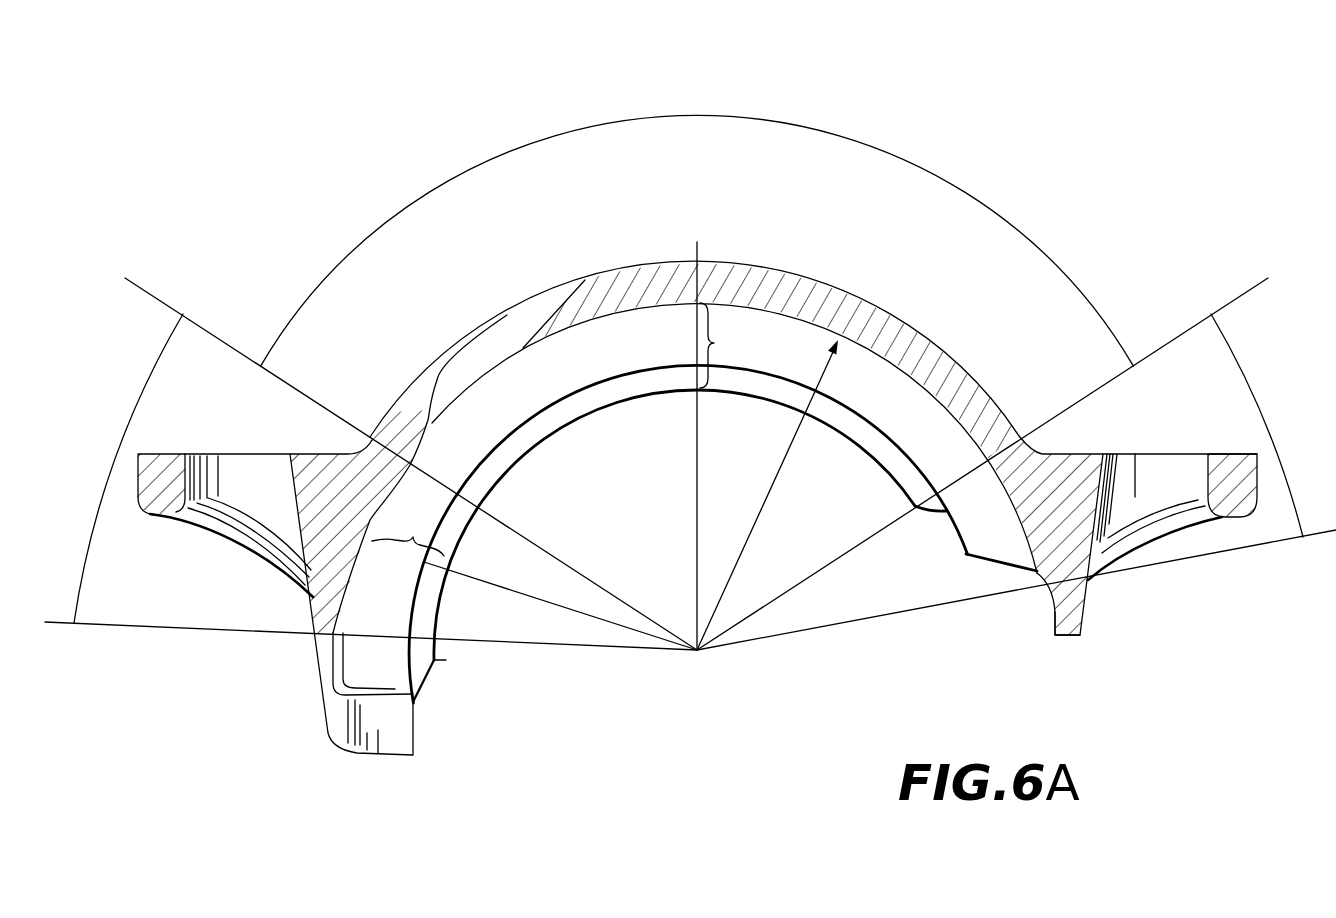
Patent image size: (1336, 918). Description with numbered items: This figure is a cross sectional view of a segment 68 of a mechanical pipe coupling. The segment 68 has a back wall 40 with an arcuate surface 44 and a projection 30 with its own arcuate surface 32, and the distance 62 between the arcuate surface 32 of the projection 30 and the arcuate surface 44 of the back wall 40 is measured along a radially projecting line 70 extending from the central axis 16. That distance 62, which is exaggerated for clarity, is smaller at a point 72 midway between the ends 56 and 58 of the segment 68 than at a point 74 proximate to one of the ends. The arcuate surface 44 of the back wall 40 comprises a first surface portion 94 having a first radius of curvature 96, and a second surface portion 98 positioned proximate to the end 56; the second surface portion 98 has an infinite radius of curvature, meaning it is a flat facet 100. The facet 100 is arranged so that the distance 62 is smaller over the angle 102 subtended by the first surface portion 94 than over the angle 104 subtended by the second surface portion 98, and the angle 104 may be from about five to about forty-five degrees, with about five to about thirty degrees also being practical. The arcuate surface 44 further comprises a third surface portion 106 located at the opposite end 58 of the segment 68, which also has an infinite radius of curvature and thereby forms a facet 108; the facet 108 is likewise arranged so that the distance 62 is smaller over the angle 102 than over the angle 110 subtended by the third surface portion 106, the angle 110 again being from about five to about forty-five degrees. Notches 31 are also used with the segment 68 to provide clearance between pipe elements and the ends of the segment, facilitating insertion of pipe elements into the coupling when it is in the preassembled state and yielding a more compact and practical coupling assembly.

The central axis 16 is at (697, 652).
The projection 30 is at (899, 473).
The notches 31 is at (940, 528).
The arcuate surface 32 is at (900, 488).
The back wall 40 is at (983, 405).
The arcuate surface 44 is at (1012, 506).
The end 56 is at (378, 758).
The end 58 is at (1040, 610).
The distance 62 is at (566, 429).
The segment 68 is at (703, 402).
The radially projecting line 70 is at (538, 597).
The point 72 is at (697, 303).
The point 74 is at (450, 566).
The first surface portion 94 is at (923, 390).
The first radius of curvature 96 is at (738, 573).
The second surface portion 98 is at (360, 557).
The facet 100 is at (355, 578).
The angle 102 is at (820, 128).
The angle 104 is at (129, 420).
The third surface portion 106 is at (1113, 494).
The facet 108 is at (1094, 581).
The angle 110 is at (1252, 388).